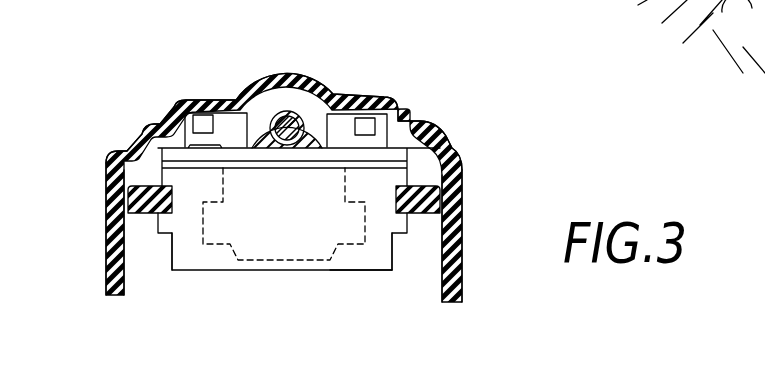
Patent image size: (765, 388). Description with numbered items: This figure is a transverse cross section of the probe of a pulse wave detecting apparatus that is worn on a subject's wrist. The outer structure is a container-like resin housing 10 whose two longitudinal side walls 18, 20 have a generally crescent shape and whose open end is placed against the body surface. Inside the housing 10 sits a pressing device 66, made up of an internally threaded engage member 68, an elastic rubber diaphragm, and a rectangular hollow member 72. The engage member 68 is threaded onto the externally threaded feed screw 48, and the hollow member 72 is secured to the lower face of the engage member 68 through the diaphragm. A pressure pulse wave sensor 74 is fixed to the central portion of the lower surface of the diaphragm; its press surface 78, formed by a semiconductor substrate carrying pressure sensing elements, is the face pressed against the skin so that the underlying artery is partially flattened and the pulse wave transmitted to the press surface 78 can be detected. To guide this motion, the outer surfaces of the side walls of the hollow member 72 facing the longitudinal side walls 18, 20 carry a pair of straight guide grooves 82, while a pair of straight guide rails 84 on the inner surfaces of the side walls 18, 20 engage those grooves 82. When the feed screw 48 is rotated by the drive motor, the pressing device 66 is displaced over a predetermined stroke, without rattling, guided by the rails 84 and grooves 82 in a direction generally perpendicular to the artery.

The housing 10 is at (440, 131).
The longitudinal side wall 18 is at (115, 263).
The longitudinal side wall 20 is at (448, 243).
The feed screw 48 is at (284, 122).
The pressing device 66 is at (210, 276).
The engage member 68 is at (326, 104).
The rectangular hollow member 72 is at (363, 262).
The pressure pulse wave sensor 74 is at (302, 262).
The press surface 78 is at (272, 262).
The guide groove 82 is at (158, 208).
The guide rail 84 is at (128, 200).